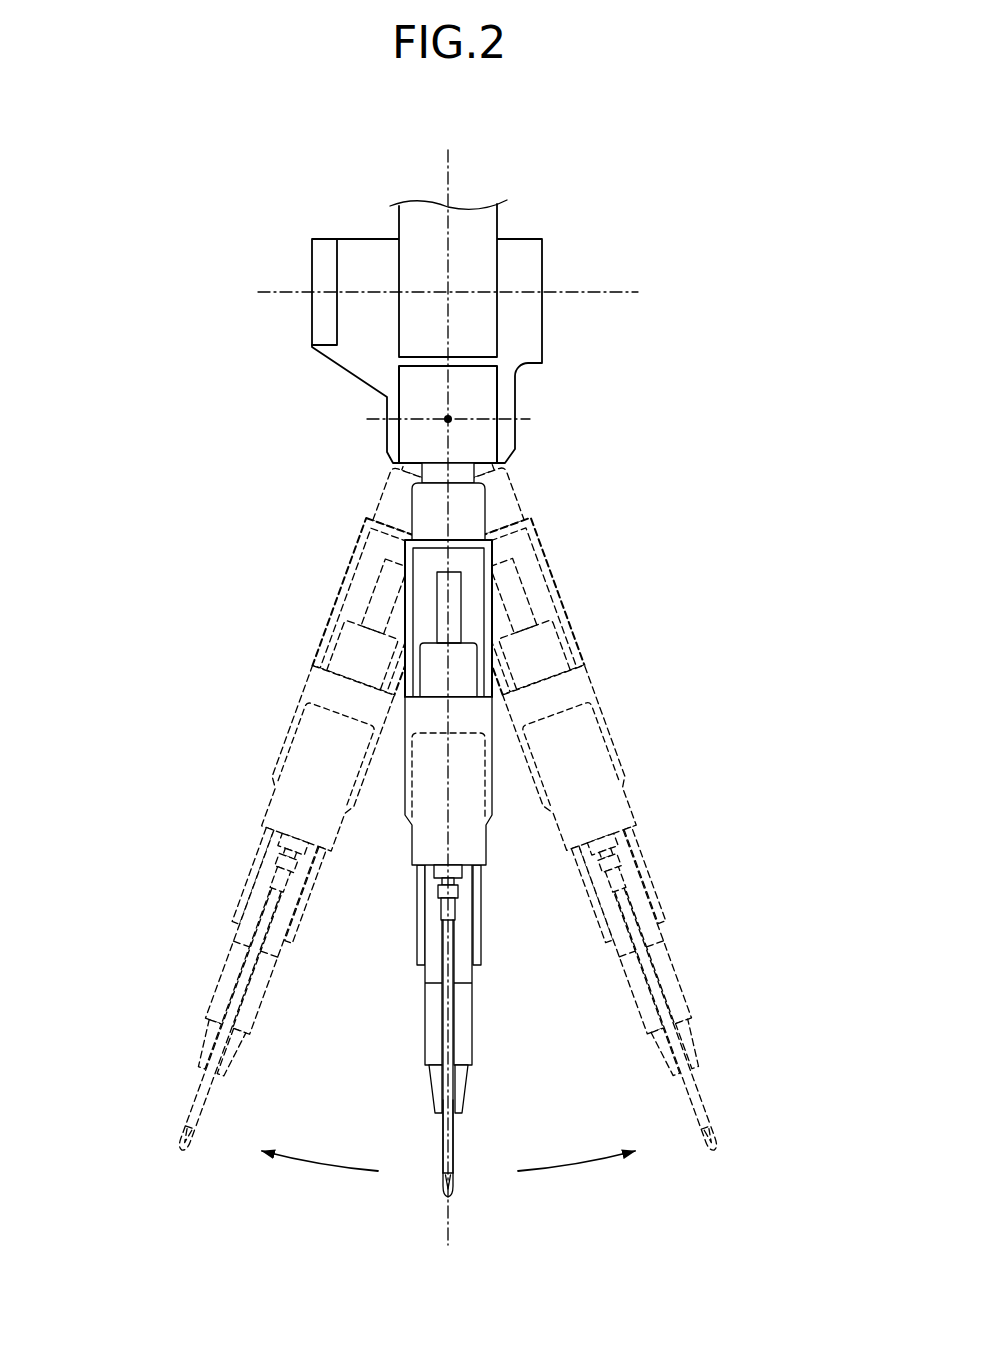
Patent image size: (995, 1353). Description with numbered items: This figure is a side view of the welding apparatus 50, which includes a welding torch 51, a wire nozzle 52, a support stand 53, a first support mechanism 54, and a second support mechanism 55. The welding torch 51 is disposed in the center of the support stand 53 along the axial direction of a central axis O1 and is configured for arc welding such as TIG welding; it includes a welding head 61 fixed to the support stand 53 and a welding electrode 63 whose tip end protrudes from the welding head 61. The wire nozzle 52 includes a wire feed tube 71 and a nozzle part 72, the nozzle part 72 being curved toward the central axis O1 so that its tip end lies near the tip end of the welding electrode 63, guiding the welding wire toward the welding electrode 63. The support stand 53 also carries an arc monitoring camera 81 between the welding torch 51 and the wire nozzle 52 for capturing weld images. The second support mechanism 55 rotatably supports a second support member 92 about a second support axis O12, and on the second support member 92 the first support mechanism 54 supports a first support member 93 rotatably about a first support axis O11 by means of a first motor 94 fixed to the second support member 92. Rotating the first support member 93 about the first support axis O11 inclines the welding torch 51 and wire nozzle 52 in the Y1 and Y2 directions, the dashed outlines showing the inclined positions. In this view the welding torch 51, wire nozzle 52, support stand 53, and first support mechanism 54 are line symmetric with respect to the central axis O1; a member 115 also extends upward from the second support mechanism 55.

The welding apparatus 50 is at (700, 188).
The welding torch 51 is at (474, 1005).
The wire nozzle 52 is at (441, 939).
The support stand 53 is at (497, 549).
The first support mechanism 54 is at (520, 475).
The second support mechanism 55 is at (353, 228).
The welding head 61 is at (425, 1017).
The welding electrode 63 is at (455, 1196).
The wire feed tube 71 is at (459, 910).
The nozzle part 72 is at (443, 1150).
The arc monitoring camera 81 is at (488, 768).
The second support member 92 is at (318, 259).
The first support member 93 is at (432, 474).
The first motor 94 is at (490, 442).
The support pole 115 is at (416, 218).
The central axis O1 is at (447, 837).
The first support axis O11 is at (450, 418).
The second support axis O12 is at (604, 290).
The Y1 direction Y1 is at (583, 1163).
The Y2 direction Y2 is at (313, 1163).